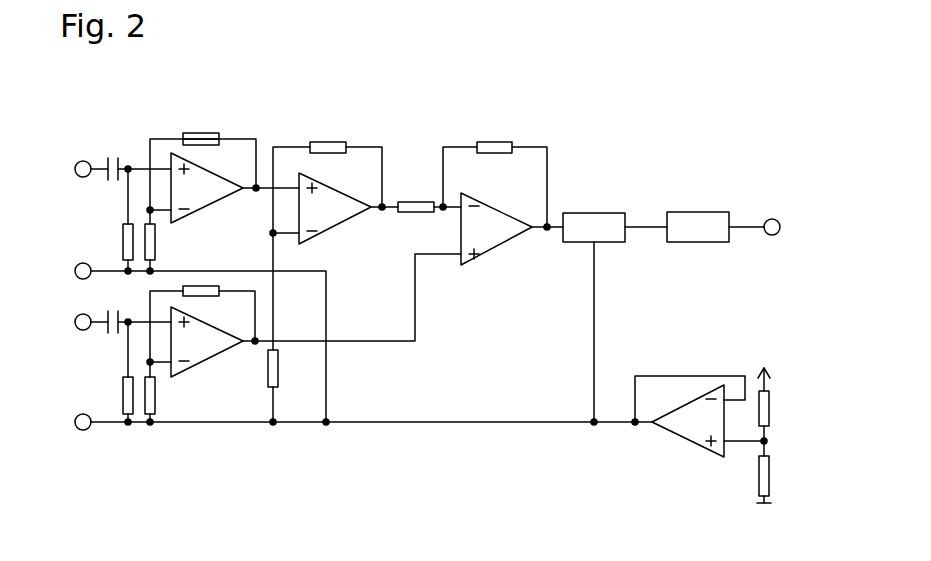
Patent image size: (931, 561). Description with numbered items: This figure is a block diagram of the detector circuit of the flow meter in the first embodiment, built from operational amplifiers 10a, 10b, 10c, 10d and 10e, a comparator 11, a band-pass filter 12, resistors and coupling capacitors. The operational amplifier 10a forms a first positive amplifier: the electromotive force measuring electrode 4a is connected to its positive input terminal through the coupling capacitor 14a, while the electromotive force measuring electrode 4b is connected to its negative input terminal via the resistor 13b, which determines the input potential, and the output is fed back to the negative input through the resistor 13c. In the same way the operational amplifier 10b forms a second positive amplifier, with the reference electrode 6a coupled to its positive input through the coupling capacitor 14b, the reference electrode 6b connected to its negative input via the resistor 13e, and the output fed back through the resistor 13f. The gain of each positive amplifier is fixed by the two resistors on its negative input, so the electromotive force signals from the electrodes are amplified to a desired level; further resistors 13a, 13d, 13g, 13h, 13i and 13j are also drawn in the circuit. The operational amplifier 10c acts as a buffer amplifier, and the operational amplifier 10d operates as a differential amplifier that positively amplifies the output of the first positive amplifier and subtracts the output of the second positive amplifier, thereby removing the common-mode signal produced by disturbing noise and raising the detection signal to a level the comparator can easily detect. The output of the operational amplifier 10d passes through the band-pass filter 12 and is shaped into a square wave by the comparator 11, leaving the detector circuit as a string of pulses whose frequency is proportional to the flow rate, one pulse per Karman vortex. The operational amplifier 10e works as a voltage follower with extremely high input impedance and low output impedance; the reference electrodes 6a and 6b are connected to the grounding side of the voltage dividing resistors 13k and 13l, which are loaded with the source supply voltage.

The electromotive force measuring electrode 4a is at (78, 169).
The electromotive force measuring electrode 4b is at (188, 343).
The reference electrode 6a is at (78, 322).
The reference electrode 6b is at (350, 422).
The coupling capacitor 14a is at (137, 158).
The coupling capacitor 14b is at (134, 312).
The operational amplifier 10a is at (224, 183).
The operational amplifier 10b is at (211, 339).
The operational amplifier 10c is at (335, 203).
The operational amplifier 10d is at (418, 262).
The operational amplifier 10e is at (701, 416).
The resistor 13a is at (109, 220).
The resistor 13b is at (170, 240).
The resistor 13c is at (201, 160).
The resistor 13d is at (111, 372).
The resistor 13e is at (169, 392).
The resistor 13f is at (201, 317).
The feedback resistor 13g is at (326, 231).
The resistor 13h is at (293, 386).
The input resistor 13i is at (429, 194).
The feedback resistor 13j is at (495, 173).
The voltage dividing resistor 13k is at (784, 402).
The voltage dividing resistor 13l is at (781, 472).
The band-pass filter 12 is at (615, 317).
The comparator 11 is at (737, 209).